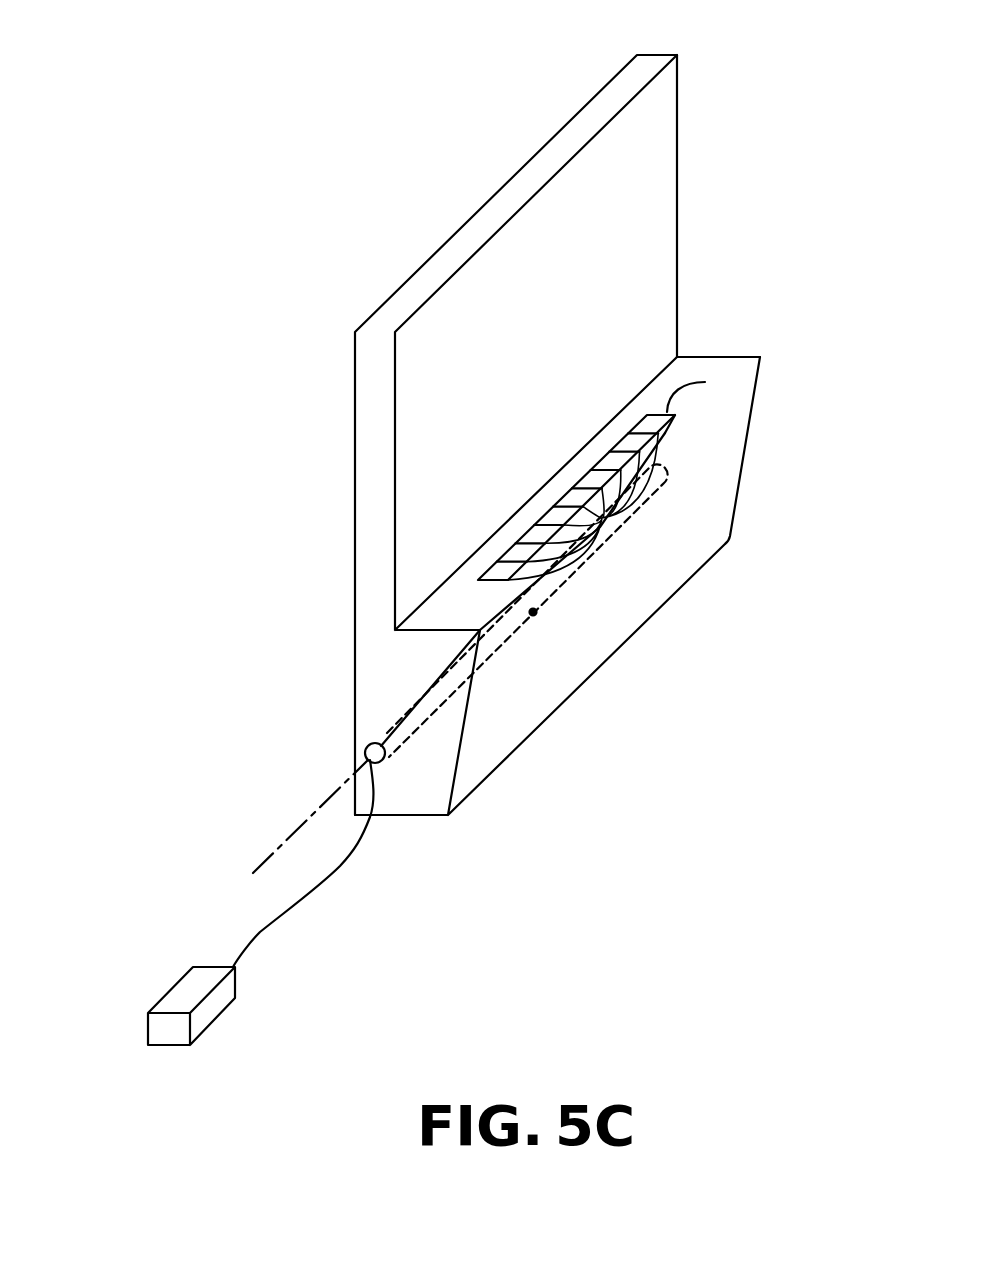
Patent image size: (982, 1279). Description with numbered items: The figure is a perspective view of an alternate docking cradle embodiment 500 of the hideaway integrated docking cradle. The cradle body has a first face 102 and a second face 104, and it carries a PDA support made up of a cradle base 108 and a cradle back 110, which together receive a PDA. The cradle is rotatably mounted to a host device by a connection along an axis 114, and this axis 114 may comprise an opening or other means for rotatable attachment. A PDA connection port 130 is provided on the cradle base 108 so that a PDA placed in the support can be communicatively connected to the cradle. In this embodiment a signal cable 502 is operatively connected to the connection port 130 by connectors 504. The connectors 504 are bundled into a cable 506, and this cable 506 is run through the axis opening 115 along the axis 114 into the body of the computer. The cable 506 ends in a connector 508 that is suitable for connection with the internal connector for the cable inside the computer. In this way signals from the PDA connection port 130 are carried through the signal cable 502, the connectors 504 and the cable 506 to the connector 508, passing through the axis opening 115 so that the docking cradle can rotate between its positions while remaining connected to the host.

The docking cradle embodiment 500 is at (431, 134).
The first face 102 is at (397, 817).
The second face 104 is at (353, 430).
The cradle base 108 is at (712, 365).
The cradle back 110 is at (658, 215).
The axis 114 is at (293, 828).
The axis opening 115 is at (366, 746).
The PDA connection port 130 is at (705, 382).
The signal cable 502 is at (537, 613).
The connectors 504 is at (632, 508).
The cable 506 is at (428, 705).
The connector 508 is at (173, 982).